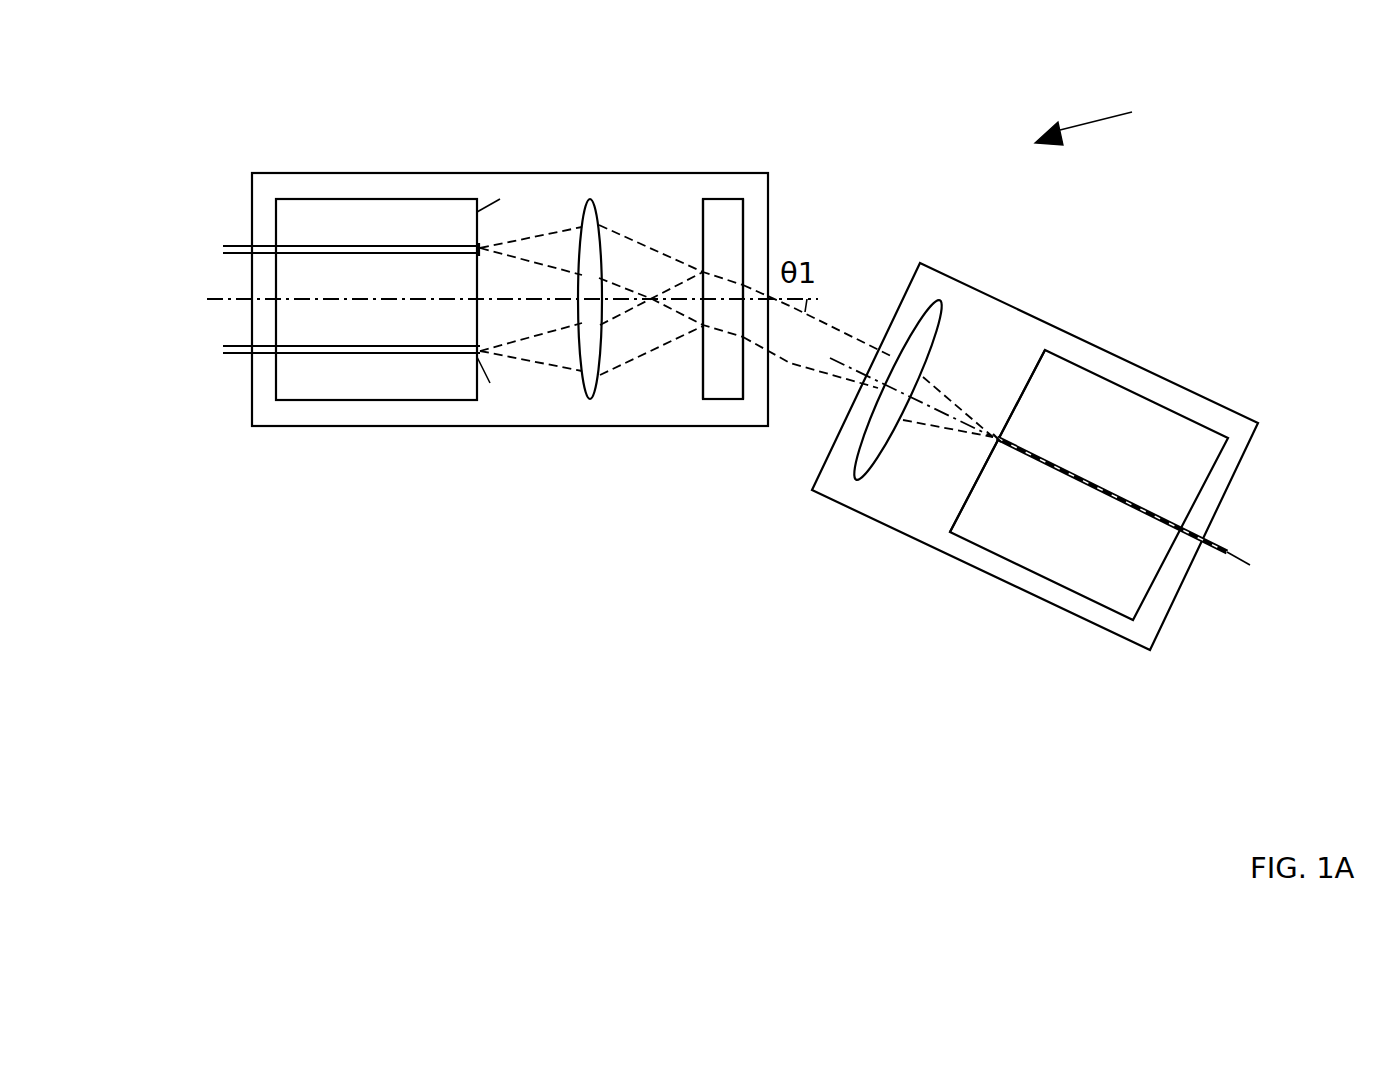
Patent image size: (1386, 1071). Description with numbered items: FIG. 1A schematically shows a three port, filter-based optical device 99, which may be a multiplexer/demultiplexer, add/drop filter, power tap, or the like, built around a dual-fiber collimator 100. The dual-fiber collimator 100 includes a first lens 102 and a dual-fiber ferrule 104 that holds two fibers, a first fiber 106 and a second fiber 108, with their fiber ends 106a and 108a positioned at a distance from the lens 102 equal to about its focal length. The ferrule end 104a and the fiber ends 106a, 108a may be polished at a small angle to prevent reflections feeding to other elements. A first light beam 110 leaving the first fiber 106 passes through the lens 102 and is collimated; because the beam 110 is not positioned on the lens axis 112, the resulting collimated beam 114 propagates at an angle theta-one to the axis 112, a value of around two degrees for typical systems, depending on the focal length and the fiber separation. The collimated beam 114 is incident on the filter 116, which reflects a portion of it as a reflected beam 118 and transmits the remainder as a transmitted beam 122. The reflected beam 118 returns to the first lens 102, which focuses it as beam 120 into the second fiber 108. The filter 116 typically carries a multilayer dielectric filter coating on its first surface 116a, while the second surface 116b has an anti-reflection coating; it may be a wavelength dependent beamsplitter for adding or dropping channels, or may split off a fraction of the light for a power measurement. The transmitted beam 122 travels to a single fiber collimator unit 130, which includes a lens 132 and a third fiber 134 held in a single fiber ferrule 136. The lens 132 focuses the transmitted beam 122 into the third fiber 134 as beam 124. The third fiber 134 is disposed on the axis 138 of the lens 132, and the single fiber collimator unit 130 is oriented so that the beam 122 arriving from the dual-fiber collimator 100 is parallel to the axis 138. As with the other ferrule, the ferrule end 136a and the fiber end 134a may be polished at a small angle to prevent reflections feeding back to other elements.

The filter-based optical device 99 is at (1107, 117).
The dual-fiber collimator 100 is at (298, 174).
The first lens 102 is at (587, 202).
The dual-fiber ferrule 104 is at (325, 400).
The ferrule end 104a is at (500, 199).
The first fiber 106 is at (235, 245).
The first fiber end 106a is at (486, 174).
The second fiber 108 is at (235, 353).
The second fiber end 108a is at (490, 383).
The first light beam 110 is at (528, 233).
The lens axis 112 is at (215, 297).
The collimated beam 114 is at (652, 248).
The filter 116 is at (731, 199).
The first surface 116a is at (702, 393).
The second surface 116b is at (747, 395).
The reflected beam 118 is at (637, 358).
The focused beam 120 is at (540, 363).
The transmitted beam 122 is at (820, 322).
The focused beam 124 is at (925, 425).
The single fiber collimator unit 130 is at (1160, 373).
The lens 132 is at (940, 300).
The third fiber 134 is at (1208, 543).
The fiber end 134a is at (990, 440).
The single fiber ferrule 136 is at (995, 543).
The ferrule end 136a is at (1040, 345).
The axis 138 is at (1245, 552).